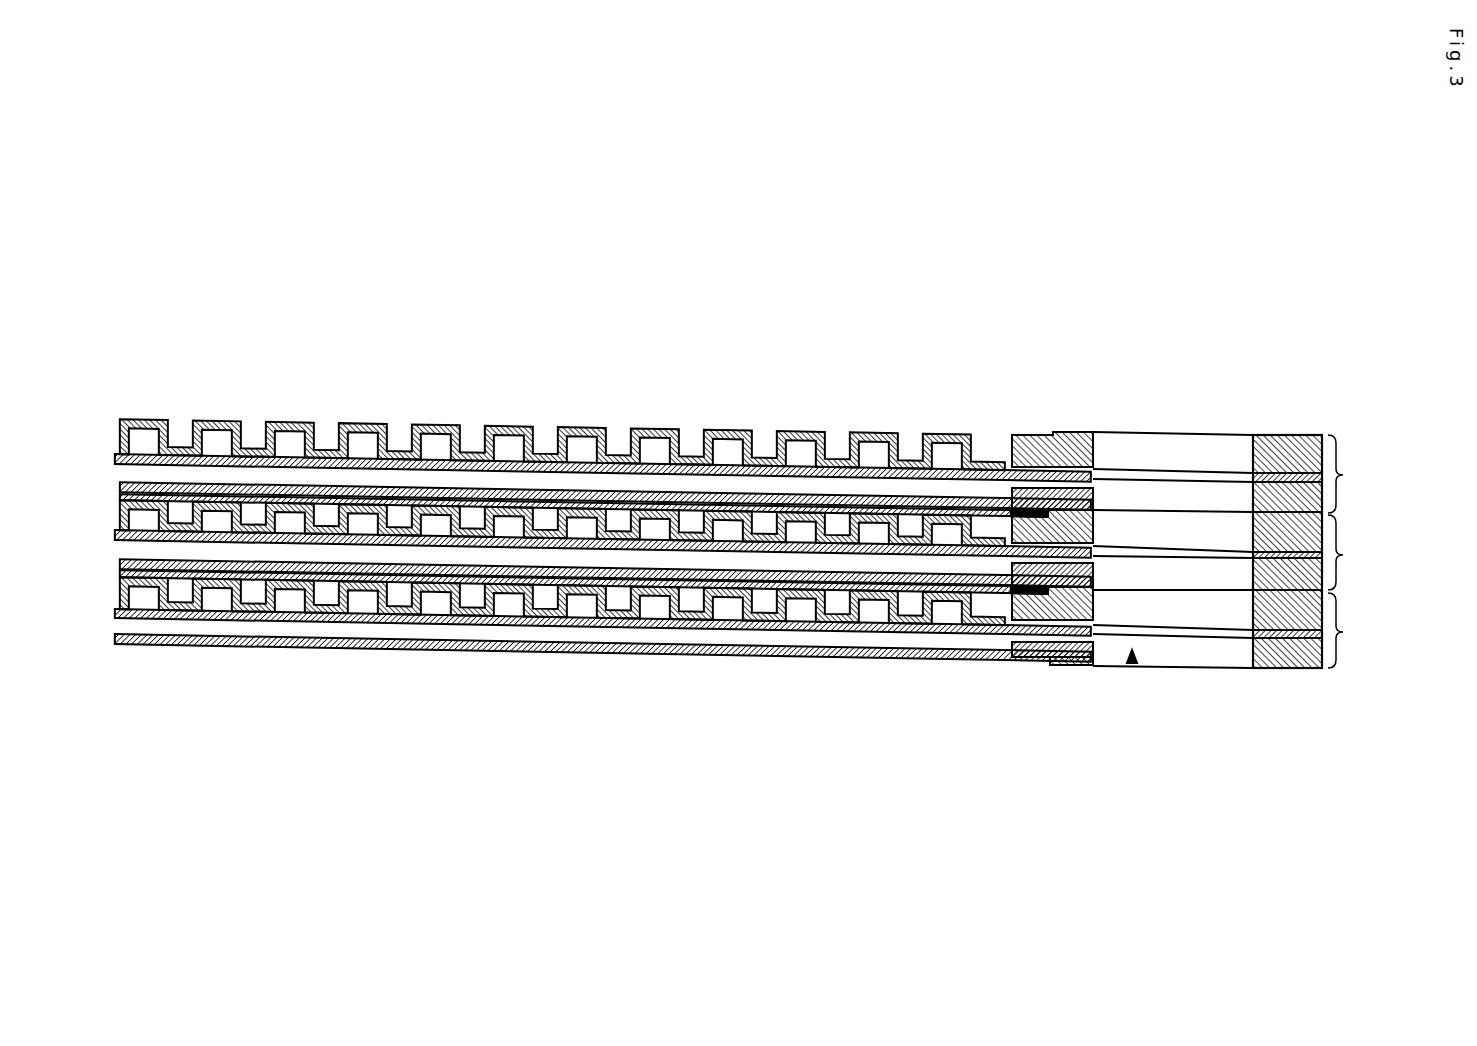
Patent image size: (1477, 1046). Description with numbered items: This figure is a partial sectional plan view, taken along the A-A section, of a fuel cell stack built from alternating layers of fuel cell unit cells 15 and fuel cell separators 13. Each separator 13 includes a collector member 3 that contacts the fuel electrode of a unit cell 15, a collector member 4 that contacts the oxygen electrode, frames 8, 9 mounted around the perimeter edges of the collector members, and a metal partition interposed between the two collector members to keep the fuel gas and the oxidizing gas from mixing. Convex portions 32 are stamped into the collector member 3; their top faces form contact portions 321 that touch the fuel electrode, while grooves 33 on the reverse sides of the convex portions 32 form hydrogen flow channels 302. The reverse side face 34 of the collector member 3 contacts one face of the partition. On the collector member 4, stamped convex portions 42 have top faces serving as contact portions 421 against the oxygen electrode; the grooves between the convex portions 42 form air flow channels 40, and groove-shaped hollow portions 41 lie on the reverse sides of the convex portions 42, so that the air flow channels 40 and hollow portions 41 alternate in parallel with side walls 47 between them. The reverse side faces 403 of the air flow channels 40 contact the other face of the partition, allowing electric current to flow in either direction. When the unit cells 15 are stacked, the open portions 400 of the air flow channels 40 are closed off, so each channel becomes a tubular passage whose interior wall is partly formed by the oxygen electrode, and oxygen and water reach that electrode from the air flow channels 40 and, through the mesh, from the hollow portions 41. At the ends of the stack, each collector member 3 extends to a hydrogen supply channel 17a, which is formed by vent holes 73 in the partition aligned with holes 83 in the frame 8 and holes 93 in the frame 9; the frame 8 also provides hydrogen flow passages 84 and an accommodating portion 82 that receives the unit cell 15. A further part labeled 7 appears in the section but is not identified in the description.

The collector member 3 is at (762, 590).
The collector member 4 is at (553, 486).
The end plate 7 is at (1073, 432).
The frame 8 is at (1313, 435).
The frame 9 is at (1277, 462).
The fuel cell separator 13 is at (1350, 551).
The fuel cell unit cell 15 is at (707, 500).
The hydrogen supply channel 17a is at (1132, 660).
The convex portions 32 is at (655, 576).
The grooves 33 is at (540, 600).
The reverse side face 34 is at (478, 598).
The air flow channels 40 is at (398, 512).
The hollow portions 41 is at (308, 570).
The convex portions 42 is at (833, 495).
The side walls 47 is at (805, 607).
The vent holes 73 is at (1263, 667).
The accommodating portion 82 is at (1033, 662).
The holes 83 is at (1182, 494).
The hydrogen flow passages 84 is at (997, 458).
The holes 93 is at (1183, 443).
The hydrogen flow channels 302 is at (845, 628).
The contact portions 321 is at (914, 610).
The open portions 400 is at (325, 422).
The reverse side faces 403 is at (437, 588).
The contact portions 421 is at (755, 512).